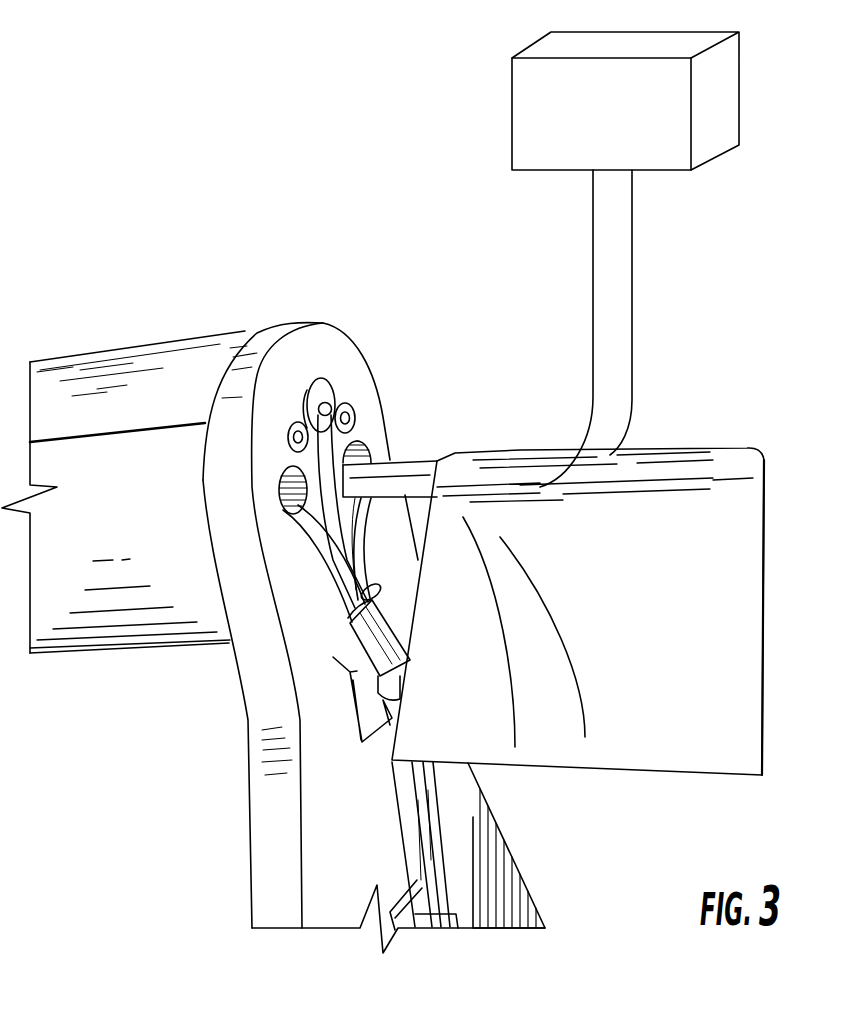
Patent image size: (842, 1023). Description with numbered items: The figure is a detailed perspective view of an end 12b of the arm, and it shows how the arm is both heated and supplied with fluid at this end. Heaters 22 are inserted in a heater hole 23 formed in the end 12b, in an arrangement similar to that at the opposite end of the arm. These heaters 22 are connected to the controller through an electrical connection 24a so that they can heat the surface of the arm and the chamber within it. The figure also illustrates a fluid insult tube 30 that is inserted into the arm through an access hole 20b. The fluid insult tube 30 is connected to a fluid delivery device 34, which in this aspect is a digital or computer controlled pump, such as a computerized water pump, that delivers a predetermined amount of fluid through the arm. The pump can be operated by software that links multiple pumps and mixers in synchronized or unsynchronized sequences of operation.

The fluid delivery device 34 is at (573, 111).
The heaters 22 is at (323, 388).
The access hole 20b is at (385, 451).
The heater hole 23 is at (282, 522).
The fluid insult tube 30 is at (410, 497).
The electrical connection 24a is at (372, 585).
The end of the arm 12b is at (382, 686).